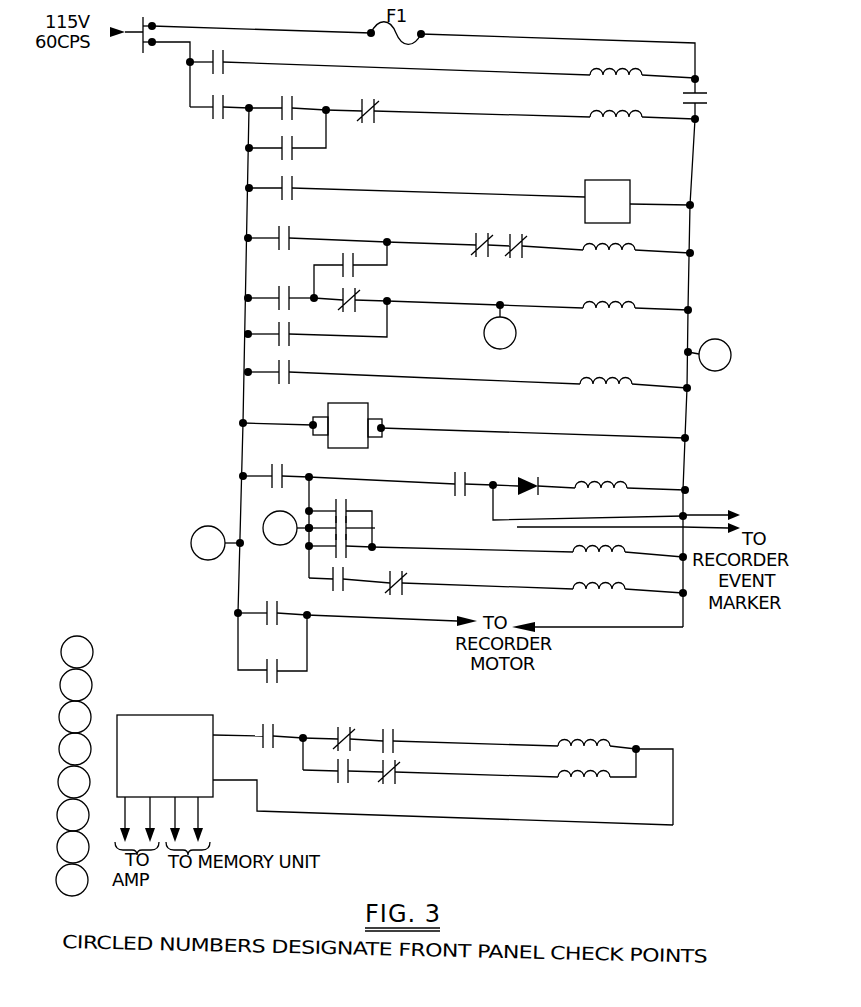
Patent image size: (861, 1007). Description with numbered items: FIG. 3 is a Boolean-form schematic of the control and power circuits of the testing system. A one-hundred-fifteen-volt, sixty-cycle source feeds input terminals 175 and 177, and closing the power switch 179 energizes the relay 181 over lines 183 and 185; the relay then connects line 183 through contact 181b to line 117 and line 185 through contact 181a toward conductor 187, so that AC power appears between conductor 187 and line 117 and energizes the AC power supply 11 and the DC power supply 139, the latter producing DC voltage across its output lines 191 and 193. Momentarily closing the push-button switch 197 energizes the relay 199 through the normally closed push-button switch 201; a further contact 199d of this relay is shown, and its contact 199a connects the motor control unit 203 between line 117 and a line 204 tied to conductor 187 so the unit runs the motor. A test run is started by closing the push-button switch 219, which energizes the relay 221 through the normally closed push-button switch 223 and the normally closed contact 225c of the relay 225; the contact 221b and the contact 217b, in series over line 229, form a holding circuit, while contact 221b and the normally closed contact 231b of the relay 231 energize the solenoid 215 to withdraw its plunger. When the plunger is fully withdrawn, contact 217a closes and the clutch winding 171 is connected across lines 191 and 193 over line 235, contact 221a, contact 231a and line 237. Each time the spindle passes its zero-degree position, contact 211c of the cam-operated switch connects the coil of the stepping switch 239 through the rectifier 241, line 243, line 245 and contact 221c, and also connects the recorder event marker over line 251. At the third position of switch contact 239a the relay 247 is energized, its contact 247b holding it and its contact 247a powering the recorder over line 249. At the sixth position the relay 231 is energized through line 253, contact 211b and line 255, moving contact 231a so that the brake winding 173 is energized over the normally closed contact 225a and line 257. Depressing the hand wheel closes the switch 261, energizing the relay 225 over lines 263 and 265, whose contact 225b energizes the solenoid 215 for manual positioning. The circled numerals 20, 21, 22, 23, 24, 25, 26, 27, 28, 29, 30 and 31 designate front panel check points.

The input terminal 175 is at (154, 24).
The input terminal 177 is at (154, 45).
The line 183 is at (189, 45).
The line 185 is at (294, 30).
The power switch 179 is at (225, 64).
The relay 181 is at (590, 75).
The contact of relay 181 181a is at (710, 102).
The contact of relay 181 181b is at (215, 119).
The push-button switch 197 is at (294, 103).
The normally closed push-button switch 201 is at (377, 106).
The relay 199 is at (581, 116).
The contact 199d is at (293, 152).
The motor control unit 203 is at (585, 190).
The contact of relay 199 199a is at (293, 192).
The line 204 is at (680, 205).
The normally open push-button switch 219 is at (294, 239).
The line 229 is at (391, 243).
The relay 221 is at (585, 250).
The contact of relay 221 221b is at (280, 289).
The contact of switch 217 217b is at (357, 269).
The normally closed push-button switch 223 is at (490, 257).
The normally closed contact of relay 225 225c is at (523, 254).
The solenoid 215 is at (598, 308).
The conductor 187 is at (690, 290).
The line 117 is at (242, 315).
The normally closed contact of relay 231 231b is at (355, 308).
The contact of relay 225 225b is at (293, 337).
The line 265 is at (245, 370).
The line 263 is at (432, 378).
The relay 225 is at (580, 384).
The switch 261 is at (288, 386).
The AC power supply 11 is at (364, 407).
The DC power supply 139 is at (358, 448).
The line 245 is at (348, 475).
The contact of relay 221 221c is at (268, 480).
The contact of relay 247 247b is at (347, 510).
The contact of cam-operated switch 211 211c is at (455, 480).
The line 243 is at (490, 472).
The rectifier 241 is at (527, 478).
The stepping switch 239 is at (600, 478).
The line 251 is at (596, 522).
The switch contact of stepping switch 239a is at (348, 533).
The relay 247 is at (573, 554).
The line 253 is at (546, 590).
The relay 231 is at (601, 589).
The line 255 is at (346, 579).
The contact of cam-operated switch 211 211b is at (403, 583).
The contact of relay 247 247a is at (285, 595).
The line 249 is at (443, 636).
The output line of DC power supply 193 is at (224, 734).
The contact of switch 217 217a is at (275, 731).
The contact of relay 231 231a is at (350, 737).
The contact of relay 221 221a is at (398, 738).
The line 235 is at (502, 742).
The winding of clutch 169 171 is at (577, 740).
The line 237 is at (296, 742).
The normally closed contact of relay 225 225a is at (398, 783).
The line 257 is at (497, 778).
The brake winding of clutch 169 173 is at (611, 778).
The output line of DC power supply 191 is at (371, 816).
The front panel check point 20 is at (451, 325).
The front panel check point 21 is at (217, 543).
The front panel check point 22 is at (288, 528).
The amplifier 23 is at (707, 355).
The front panel check point 24 is at (77, 652).
The front panel check point 25 is at (76, 685).
The front panel check point 26 is at (75, 717).
The front panel check point 27 is at (75, 749).
The front panel check point 28 is at (74, 782).
The front panel check point 29 is at (73, 815).
The front panel check point 30 is at (73, 847).
The front panel check point 31 is at (72, 880).